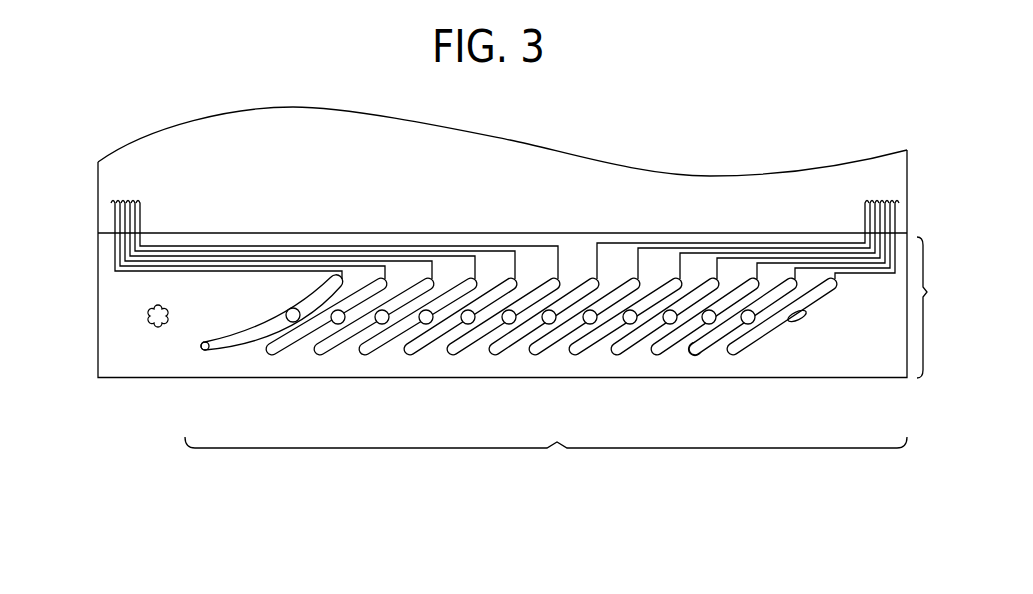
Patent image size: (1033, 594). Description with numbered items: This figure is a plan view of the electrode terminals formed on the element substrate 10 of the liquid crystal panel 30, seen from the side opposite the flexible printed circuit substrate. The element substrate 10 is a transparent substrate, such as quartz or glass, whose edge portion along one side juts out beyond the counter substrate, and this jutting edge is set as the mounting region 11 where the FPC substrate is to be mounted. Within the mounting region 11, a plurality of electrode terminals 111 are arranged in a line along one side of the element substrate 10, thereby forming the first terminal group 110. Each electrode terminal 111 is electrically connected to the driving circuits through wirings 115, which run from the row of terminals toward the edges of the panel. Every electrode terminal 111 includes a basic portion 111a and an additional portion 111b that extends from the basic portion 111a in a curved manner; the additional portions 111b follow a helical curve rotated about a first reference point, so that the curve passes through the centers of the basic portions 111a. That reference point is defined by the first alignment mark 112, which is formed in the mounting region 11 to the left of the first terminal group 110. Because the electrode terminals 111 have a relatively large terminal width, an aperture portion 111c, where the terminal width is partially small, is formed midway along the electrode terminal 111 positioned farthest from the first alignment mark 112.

The element substrate 10 is at (98, 411).
The liquid crystal panel 30 is at (228, 86).
The mounting region 11 is at (937, 307).
The first terminal group 110 is at (546, 464).
The electrode terminal 111 is at (255, 368).
The basic portion 111a is at (287, 319).
The additional portion 111b is at (227, 346).
The aperture portion 111c is at (782, 321).
The first alignment mark 112 is at (155, 326).
The wiring 115 is at (113, 227).